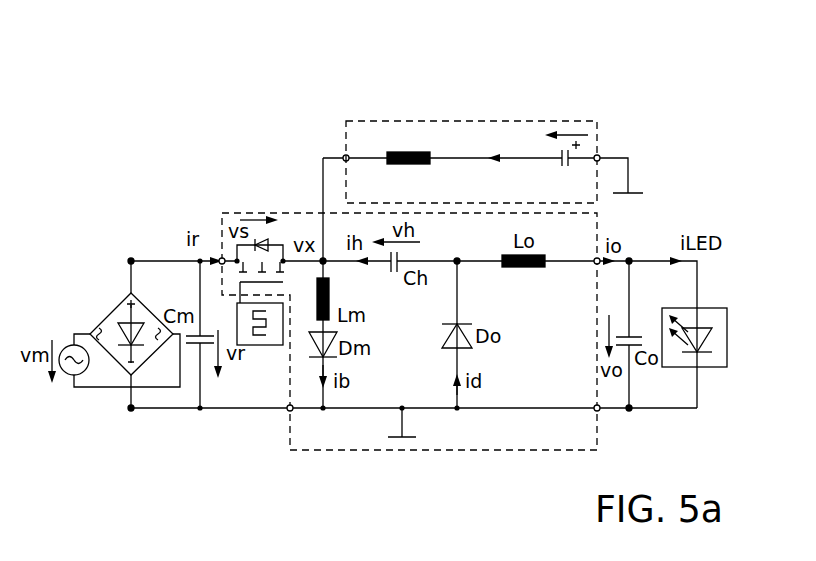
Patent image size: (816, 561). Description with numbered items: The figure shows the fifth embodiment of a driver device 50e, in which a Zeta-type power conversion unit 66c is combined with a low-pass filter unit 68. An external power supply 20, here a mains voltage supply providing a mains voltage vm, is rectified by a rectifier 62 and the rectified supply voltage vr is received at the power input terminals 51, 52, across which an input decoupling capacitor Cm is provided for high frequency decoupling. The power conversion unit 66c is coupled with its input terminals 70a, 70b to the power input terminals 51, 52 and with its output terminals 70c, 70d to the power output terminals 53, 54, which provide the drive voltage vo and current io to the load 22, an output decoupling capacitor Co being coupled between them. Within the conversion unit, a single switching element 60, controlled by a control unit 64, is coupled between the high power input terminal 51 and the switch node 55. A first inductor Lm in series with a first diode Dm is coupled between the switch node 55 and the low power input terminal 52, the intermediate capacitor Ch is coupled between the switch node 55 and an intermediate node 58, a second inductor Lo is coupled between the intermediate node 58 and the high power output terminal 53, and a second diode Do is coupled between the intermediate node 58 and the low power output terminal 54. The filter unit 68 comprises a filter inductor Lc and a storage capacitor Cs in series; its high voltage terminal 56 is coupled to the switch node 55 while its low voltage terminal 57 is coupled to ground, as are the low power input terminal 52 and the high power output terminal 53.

The driver device 50e is at (672, 68).
The external power supply 20 is at (66, 349).
The rectifier 62 is at (108, 312).
The high power input terminal 51 is at (131, 260).
The low power input terminal 52 is at (131, 409).
The power conversion unit 66c is at (268, 212).
The input terminal of power conversion unit 70a is at (221, 259).
The input terminal of power conversion unit 70b is at (289, 410).
The output terminal of power conversion unit 70c is at (596, 260).
The output terminal of power conversion unit 70d is at (599, 410).
The switching element 60 is at (279, 236).
The control unit 64 is at (283, 346).
The switch node 55 is at (325, 264).
The high voltage terminal 56 is at (347, 156).
The filter unit 68 is at (530, 120).
The low voltage terminal 57 is at (599, 156).
The intermediate node 58 is at (459, 264).
The high power output terminal 53 is at (631, 260).
The low power output terminal 54 is at (631, 410).
The load 22 is at (700, 308).